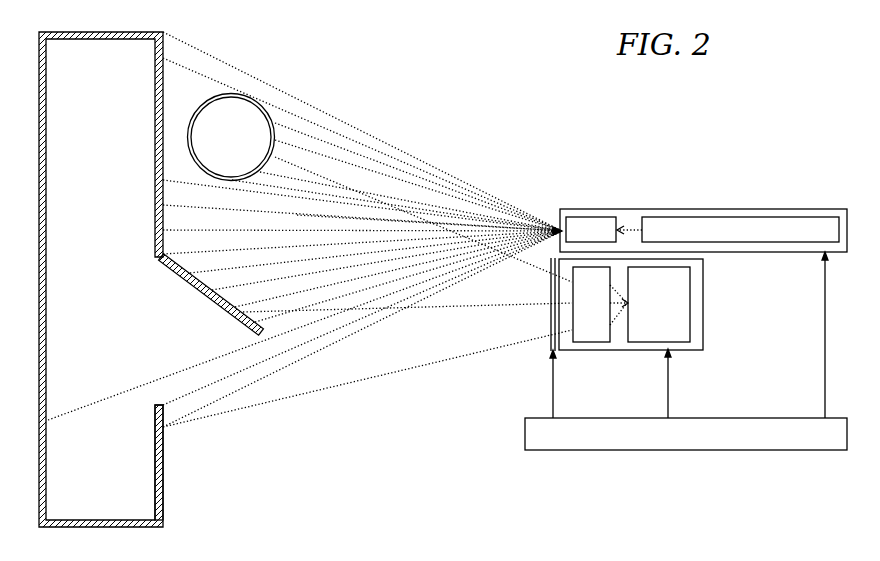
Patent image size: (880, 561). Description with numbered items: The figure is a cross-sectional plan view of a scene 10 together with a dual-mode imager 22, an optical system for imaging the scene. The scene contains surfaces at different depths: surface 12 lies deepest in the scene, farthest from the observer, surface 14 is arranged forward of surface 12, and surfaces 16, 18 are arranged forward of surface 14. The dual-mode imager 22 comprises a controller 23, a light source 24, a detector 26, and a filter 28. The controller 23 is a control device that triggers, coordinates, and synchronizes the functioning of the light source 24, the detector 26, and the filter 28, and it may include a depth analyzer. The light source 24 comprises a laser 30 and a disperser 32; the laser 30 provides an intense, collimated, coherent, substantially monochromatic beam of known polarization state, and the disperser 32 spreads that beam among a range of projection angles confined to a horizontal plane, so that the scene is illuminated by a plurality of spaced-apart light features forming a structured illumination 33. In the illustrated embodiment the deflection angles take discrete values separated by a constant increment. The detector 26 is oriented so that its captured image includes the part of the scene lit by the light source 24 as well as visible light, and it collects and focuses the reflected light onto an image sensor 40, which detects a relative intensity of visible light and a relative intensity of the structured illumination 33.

The scene 10 is at (200, 279).
The surface 12 is at (47, 280).
The surface 14 is at (165, 450).
The surface 16 is at (228, 303).
The surface 18 is at (230, 181).
The dual-mode imager 22 is at (648, 330).
The controller 23 is at (686, 351).
The light source 24 is at (703, 210).
The detector 26 is at (648, 324).
The filter 28 is at (550, 348).
The laser 30 is at (740, 229).
The disperser 32 is at (591, 229).
The structured illumination 33 is at (373, 135).
The image sensor 40 is at (659, 304).